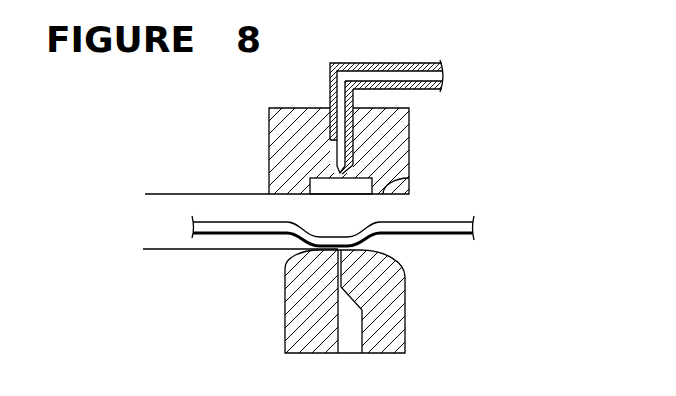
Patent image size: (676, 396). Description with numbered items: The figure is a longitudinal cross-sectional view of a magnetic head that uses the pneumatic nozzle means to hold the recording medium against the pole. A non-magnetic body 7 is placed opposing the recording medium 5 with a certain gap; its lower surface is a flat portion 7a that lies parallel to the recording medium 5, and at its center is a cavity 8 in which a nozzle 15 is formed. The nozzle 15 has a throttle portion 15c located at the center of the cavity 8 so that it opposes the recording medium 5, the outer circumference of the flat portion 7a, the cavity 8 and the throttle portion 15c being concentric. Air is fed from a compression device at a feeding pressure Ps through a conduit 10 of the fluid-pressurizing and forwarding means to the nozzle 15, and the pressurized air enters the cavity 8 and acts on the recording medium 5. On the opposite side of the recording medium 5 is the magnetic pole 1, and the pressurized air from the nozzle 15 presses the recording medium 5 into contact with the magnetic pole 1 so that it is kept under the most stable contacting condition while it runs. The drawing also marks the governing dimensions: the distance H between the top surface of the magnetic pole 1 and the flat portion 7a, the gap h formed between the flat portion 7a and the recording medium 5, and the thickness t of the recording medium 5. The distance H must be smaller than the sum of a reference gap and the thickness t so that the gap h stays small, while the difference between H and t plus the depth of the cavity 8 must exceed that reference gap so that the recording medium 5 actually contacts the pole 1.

The magnetic pole 1 is at (383, 315).
The recording medium 5 is at (455, 229).
The non-magnetic body 7 is at (390, 125).
The flat portion 7a is at (407, 177).
The cavity 8 is at (310, 186).
The conduit 10 is at (413, 63).
The nozzle 15 is at (352, 155).
The throttle portion 15c is at (337, 172).
The pressure for feeding the air Ps is at (462, 77).
The distance between the magnetic pole and the flat portion H is at (163, 195).
The gap between the recording medium and the flat surface h is at (224, 195).
The thickness of the recording medium t is at (435, 235).